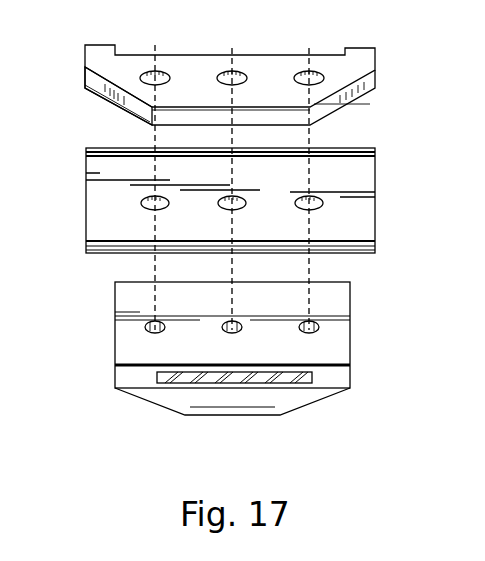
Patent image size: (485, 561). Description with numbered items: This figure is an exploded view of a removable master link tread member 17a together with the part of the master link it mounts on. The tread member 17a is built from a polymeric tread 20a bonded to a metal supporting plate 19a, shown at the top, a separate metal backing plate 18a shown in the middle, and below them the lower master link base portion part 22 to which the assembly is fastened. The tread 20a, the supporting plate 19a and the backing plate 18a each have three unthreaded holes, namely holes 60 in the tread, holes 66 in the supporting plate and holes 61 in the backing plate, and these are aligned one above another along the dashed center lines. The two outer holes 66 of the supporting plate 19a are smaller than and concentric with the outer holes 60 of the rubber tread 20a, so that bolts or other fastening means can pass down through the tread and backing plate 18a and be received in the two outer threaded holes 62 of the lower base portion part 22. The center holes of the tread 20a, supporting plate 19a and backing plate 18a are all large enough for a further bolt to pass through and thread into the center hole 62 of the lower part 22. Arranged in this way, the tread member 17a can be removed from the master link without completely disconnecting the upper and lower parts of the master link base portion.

The master link tread member 17a is at (345, 132).
The metal backing plate 18a is at (376, 180).
The metal supporting plate 19a is at (132, 112).
The polymeric tread 20a is at (274, 75).
The lower master link base portion part 22 is at (352, 355).
The unthreaded holes in tread 60 is at (230, 70).
The unthreaded holes in backing plate 61 is at (243, 206).
The threaded holes of lower base portion part 62 is at (150, 335).
The outer holes of supporting plate 66 is at (157, 70).